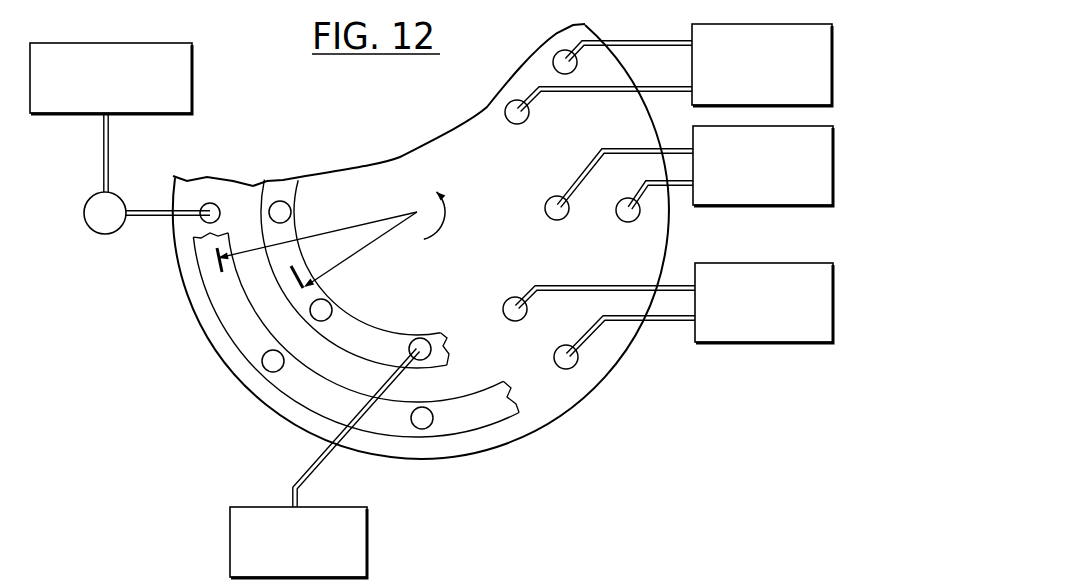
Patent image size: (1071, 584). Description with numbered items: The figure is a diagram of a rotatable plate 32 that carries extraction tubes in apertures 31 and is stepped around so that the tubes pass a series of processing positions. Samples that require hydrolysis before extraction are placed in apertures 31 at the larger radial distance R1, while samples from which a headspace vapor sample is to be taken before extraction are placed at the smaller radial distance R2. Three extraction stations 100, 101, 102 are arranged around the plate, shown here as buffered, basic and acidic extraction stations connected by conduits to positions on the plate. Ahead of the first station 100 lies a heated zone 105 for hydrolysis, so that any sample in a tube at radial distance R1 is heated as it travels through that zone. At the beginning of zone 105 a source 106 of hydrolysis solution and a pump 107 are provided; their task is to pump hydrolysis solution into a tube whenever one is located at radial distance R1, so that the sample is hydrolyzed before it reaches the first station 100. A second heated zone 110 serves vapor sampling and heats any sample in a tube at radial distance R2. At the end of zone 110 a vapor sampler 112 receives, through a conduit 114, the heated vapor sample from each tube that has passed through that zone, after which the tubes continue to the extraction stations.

The rotatable plate 32 is at (628, 346).
The heated zone for hydrolysis 105 is at (232, 327).
The heated zone for vapor sampling 110 is at (355, 274).
The apertures 31 is at (266, 366).
The source of hydrolysis solution 106 is at (193, 88).
The pump 107 is at (122, 200).
The extraction station 102 is at (656, 55).
The extraction station 101 is at (676, 173).
The first extraction station 100 is at (670, 306).
The conduit 114 is at (291, 486).
The vapor sampler 112 is at (368, 574).
The radial distance R1 is at (354, 214).
The radial distance R2 is at (362, 250).